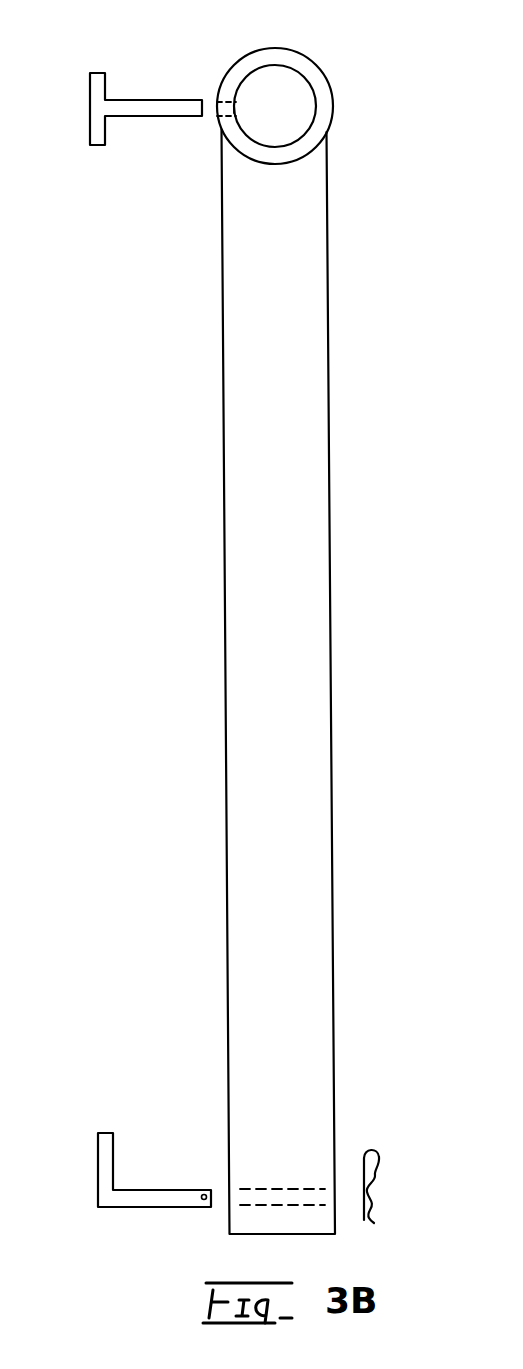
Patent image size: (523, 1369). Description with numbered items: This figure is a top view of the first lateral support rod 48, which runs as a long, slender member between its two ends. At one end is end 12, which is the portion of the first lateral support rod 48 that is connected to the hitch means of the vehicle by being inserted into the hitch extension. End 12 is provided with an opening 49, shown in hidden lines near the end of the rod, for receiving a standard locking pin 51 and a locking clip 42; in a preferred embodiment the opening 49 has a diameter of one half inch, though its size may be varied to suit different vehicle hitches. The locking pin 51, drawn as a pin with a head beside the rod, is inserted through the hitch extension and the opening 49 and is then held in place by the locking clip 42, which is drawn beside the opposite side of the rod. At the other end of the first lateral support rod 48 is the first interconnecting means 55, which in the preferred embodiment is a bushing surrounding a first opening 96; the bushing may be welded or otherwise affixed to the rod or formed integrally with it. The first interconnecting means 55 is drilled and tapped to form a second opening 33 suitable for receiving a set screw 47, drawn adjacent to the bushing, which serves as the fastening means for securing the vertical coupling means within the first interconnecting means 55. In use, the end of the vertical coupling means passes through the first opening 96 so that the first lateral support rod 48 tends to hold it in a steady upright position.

The end 12 is at (350, 1072).
The second opening 33 is at (222, 96).
The locking clip 42 is at (376, 1173).
The set screw 47 is at (95, 118).
The first lateral support rod 48 is at (260, 531).
The opening 49 is at (298, 1197).
The locking pin 51 is at (100, 1161).
The first interconnecting means 55 is at (248, 65).
The first opening 96 is at (288, 97).